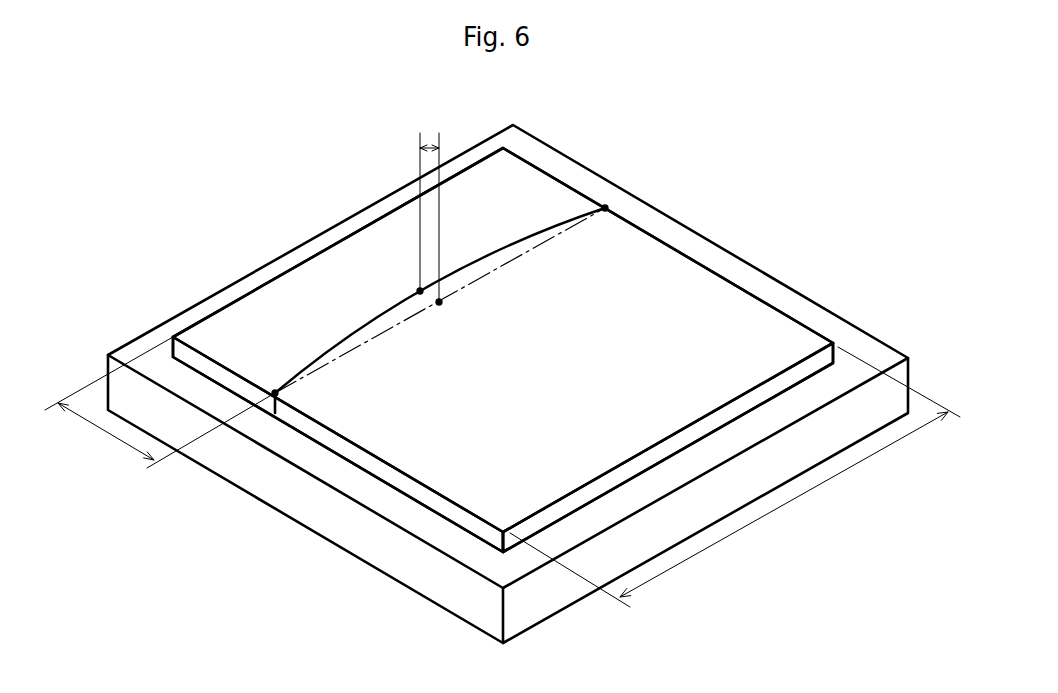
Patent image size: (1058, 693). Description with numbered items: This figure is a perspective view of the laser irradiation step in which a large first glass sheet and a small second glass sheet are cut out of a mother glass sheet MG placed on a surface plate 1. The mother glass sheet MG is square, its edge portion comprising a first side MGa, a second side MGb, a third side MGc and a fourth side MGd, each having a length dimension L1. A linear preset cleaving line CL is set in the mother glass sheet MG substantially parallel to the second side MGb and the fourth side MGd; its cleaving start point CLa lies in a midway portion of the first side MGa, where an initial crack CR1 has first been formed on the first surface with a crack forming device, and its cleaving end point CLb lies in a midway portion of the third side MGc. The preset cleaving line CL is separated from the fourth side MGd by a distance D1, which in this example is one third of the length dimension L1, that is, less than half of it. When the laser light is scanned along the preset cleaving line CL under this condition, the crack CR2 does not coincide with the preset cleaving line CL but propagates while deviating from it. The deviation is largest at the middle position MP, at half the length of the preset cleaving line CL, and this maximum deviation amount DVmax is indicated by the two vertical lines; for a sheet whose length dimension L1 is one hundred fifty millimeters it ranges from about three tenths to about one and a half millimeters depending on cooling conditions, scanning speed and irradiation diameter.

The surface plate 1 is at (228, 462).
The mother glass sheet MG is at (737, 282).
The first side MGa is at (430, 490).
The second side MGb is at (650, 448).
The third side MGc is at (688, 257).
The fourth side MGd is at (242, 296).
The preset cleaving line CL is at (540, 247).
The cleaving start point CLa is at (279, 394).
The cleaving end point CLb is at (605, 212).
The initial crack CR1 is at (279, 408).
The crack CR2 is at (352, 333).
The middle position MP is at (441, 305).
The maximum deviation amount DVmax is at (437, 147).
The separation distance D1 is at (160, 402).
The length dimension L1 is at (735, 477).